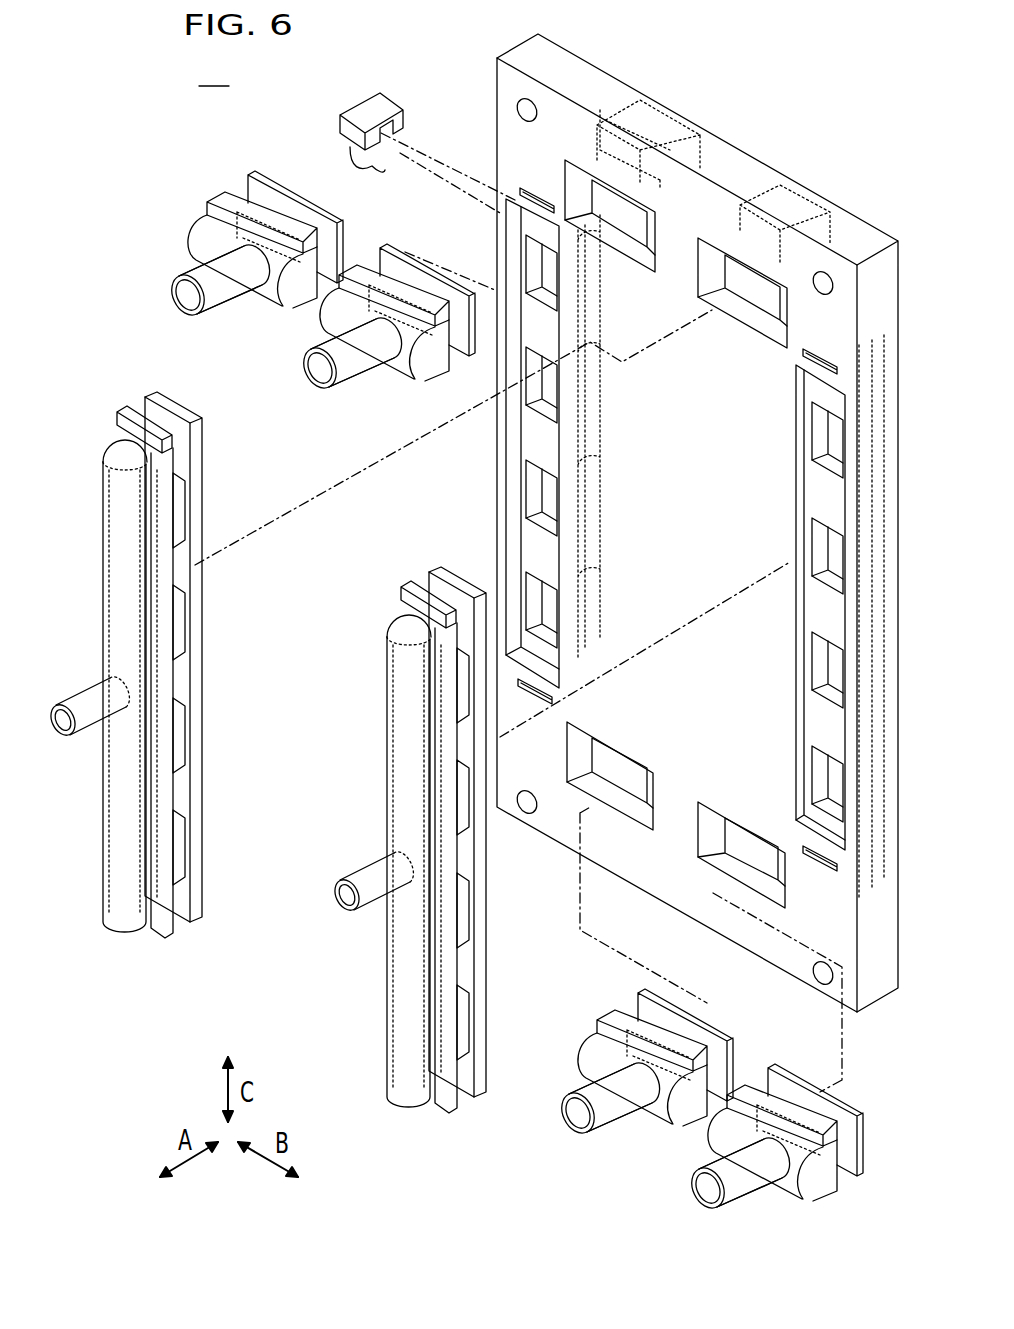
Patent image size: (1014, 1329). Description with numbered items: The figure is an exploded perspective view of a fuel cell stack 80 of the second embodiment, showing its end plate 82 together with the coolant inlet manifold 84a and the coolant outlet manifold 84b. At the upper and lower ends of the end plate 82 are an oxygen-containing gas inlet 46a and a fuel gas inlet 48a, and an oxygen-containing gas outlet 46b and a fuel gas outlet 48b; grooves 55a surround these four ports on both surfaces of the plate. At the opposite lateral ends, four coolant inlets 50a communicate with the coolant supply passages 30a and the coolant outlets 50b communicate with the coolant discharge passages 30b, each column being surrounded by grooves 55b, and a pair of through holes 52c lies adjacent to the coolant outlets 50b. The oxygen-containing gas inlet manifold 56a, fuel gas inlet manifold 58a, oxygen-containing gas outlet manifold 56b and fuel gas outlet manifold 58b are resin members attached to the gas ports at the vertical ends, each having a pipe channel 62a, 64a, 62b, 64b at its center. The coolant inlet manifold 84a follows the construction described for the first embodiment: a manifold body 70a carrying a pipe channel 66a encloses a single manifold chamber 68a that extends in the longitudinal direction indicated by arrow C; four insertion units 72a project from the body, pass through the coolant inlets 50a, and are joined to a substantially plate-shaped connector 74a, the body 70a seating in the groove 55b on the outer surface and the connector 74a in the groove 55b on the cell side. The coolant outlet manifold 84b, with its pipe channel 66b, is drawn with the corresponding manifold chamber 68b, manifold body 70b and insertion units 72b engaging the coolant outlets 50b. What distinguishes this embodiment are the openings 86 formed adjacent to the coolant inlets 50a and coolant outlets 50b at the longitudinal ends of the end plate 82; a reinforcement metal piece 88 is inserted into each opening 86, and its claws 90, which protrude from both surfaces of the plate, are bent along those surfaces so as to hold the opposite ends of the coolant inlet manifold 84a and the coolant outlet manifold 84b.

The fuel cell stack 80 is at (214, 72).
The end plate 82 is at (503, 52).
The coolant inlet manifold 84a is at (99, 455).
The coolant outlet manifold 84b is at (382, 630).
The openings 86 is at (522, 188).
The reinforcement metal piece 88 is at (346, 102).
The claws 90 is at (376, 177).
The oxygen-containing gas inlet 46a is at (640, 258).
The oxygen-containing gas outlet 46b is at (755, 880).
The fuel gas inlet 48a is at (745, 305).
The fuel gas outlet 48b is at (622, 745).
The coolant inlets 50a is at (548, 270).
The coolant outlets 50b is at (815, 425).
The coolant supply passages 30a is at (639, 380).
The coolant discharge passages 30b is at (803, 542).
The through holes 52c is at (814, 383).
The grooves 55a is at (575, 180).
The grooves 55b is at (520, 440).
The oxygen-containing gas inlet manifold 56a is at (197, 332).
The oxygen-containing gas outlet manifold 56b is at (708, 1195).
The fuel gas inlet manifold 58a is at (305, 382).
The fuel gas outlet manifold 58b is at (603, 1140).
The pipe channel 62a is at (212, 302).
The pipe channel 62b is at (756, 1185).
The pipe channel 64a is at (342, 375).
The pipe channel 64b is at (622, 1108).
The pipe channel 66a is at (90, 697).
The pipe channel 66b is at (368, 870).
The manifold chamber 68a is at (108, 551).
The rail 68b is at (392, 724).
The manifold body 70a is at (118, 912).
The cylinder 70b is at (398, 963).
The insertion units 72a is at (182, 530).
The tab 72b is at (467, 930).
The connector 74a is at (200, 697).